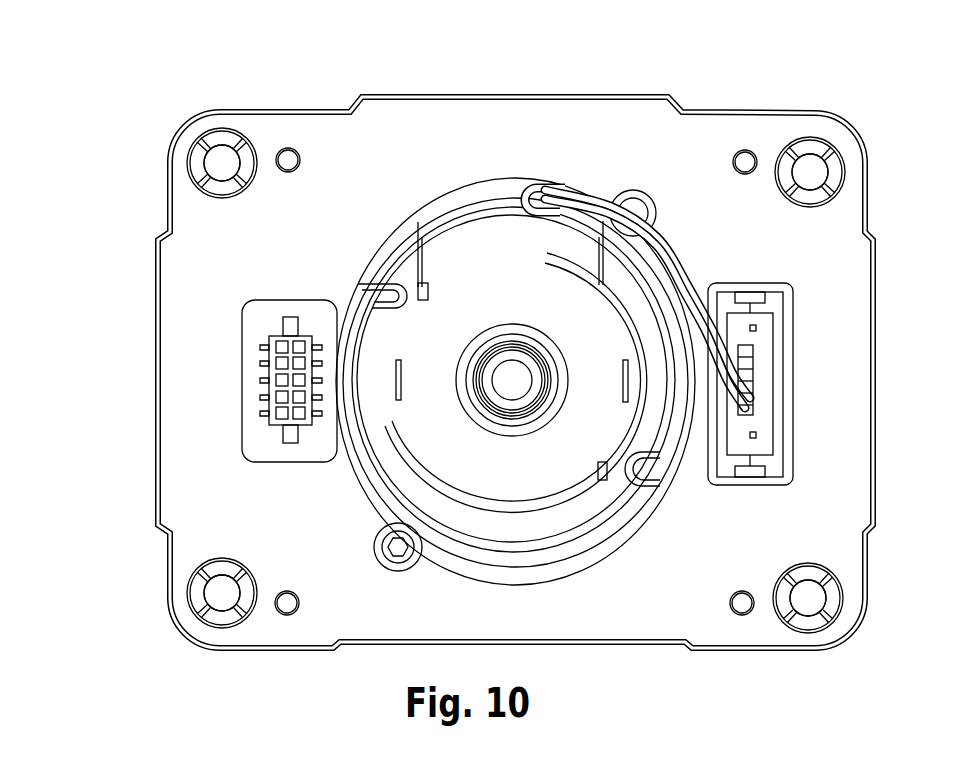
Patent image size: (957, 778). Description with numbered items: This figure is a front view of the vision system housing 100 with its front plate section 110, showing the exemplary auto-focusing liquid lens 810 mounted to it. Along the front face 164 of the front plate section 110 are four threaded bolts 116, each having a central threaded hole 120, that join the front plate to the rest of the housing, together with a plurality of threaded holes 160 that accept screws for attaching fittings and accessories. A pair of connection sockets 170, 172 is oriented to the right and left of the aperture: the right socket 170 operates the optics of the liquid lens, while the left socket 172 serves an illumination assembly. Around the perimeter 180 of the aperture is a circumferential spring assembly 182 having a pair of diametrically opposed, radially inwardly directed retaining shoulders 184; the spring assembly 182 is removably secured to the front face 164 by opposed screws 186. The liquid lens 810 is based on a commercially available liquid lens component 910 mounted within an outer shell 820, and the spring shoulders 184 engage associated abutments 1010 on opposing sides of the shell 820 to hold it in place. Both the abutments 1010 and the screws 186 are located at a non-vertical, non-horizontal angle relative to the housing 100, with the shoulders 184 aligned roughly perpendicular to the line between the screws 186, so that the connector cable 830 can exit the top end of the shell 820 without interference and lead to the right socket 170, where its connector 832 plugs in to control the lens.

The housing 100 is at (609, 90).
The front plate section 110 is at (642, 126).
The threaded bolts 116 is at (224, 160).
The central threaded holes 120 is at (221, 164).
The threaded holes 160 is at (294, 157).
The front face 164 is at (755, 550).
The right connection socket 170 is at (784, 402).
The left connection socket 172 is at (242, 403).
The perimeter 180 is at (607, 556).
The spring assembly 182 is at (566, 562).
The retaining shoulders 184 is at (405, 296).
The screws 186 is at (645, 210).
The liquid lens 810 is at (516, 366).
The outer shell 820 is at (433, 425).
The connector cable 830 is at (658, 283).
The connector 832 is at (752, 348).
The liquid lens component 910 is at (518, 392).
The abutments 1010 is at (425, 298).